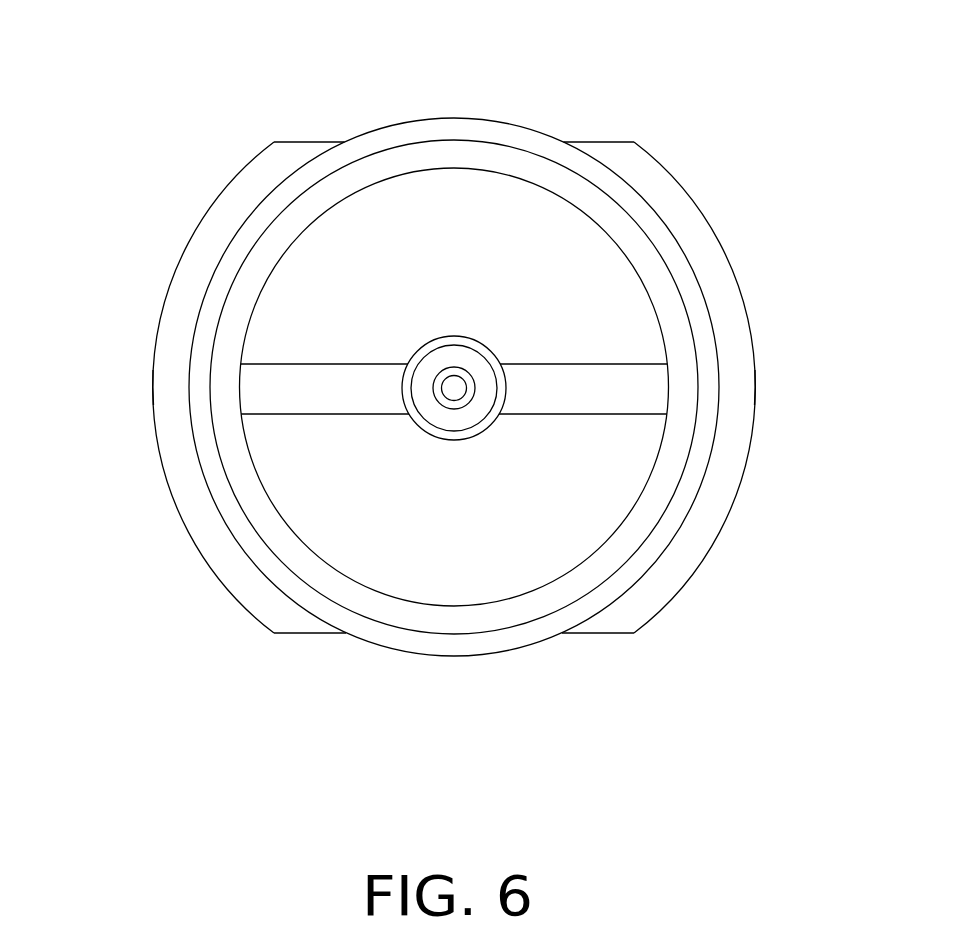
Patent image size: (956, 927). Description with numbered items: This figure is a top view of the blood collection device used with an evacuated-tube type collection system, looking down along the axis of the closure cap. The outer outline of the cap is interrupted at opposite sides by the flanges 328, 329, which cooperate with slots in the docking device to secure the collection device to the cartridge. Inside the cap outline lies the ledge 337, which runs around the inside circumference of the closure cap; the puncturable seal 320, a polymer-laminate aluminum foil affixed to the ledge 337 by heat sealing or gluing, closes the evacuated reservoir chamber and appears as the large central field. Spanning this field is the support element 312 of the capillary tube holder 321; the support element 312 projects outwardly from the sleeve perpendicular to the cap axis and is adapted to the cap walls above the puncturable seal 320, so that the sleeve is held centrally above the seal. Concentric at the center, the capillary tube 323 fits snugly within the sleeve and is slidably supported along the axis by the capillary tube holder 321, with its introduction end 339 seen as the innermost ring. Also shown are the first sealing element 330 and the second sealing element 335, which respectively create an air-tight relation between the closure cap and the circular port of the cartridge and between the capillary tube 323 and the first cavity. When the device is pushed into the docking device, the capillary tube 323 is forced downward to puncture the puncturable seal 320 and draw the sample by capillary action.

The support element 312 is at (344, 366).
The puncturable seal 320 is at (411, 567).
The capillary tube holder 321 is at (491, 339).
The capillary tube 323 is at (429, 428).
The flange 328 is at (143, 412).
The flange 329 is at (772, 403).
The first sealing element 330 is at (548, 120).
The second sealing element 335 is at (514, 450).
The ledge 337 is at (356, 145).
The introduction end 339 is at (433, 357).